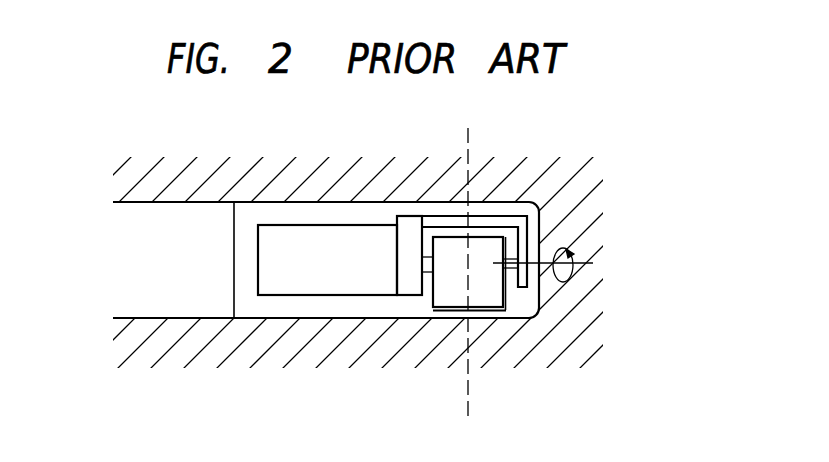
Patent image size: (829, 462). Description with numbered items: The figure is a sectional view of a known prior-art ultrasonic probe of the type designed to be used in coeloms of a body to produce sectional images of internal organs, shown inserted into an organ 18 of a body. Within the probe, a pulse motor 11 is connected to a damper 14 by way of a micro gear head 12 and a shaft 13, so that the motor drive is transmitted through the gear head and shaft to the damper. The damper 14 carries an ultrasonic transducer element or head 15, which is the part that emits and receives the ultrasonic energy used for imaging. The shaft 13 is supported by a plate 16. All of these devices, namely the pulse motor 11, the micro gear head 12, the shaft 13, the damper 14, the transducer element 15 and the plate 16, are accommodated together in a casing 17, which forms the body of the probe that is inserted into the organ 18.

The pulse motor 11 is at (327, 287).
The micro gear head 12 is at (403, 295).
The shaft 13 is at (505, 273).
The damper 14 is at (488, 247).
The ultrasonic transducer element 15 is at (492, 313).
The plate 16 is at (522, 237).
The casing 17 is at (540, 312).
The organ 18 is at (243, 350).